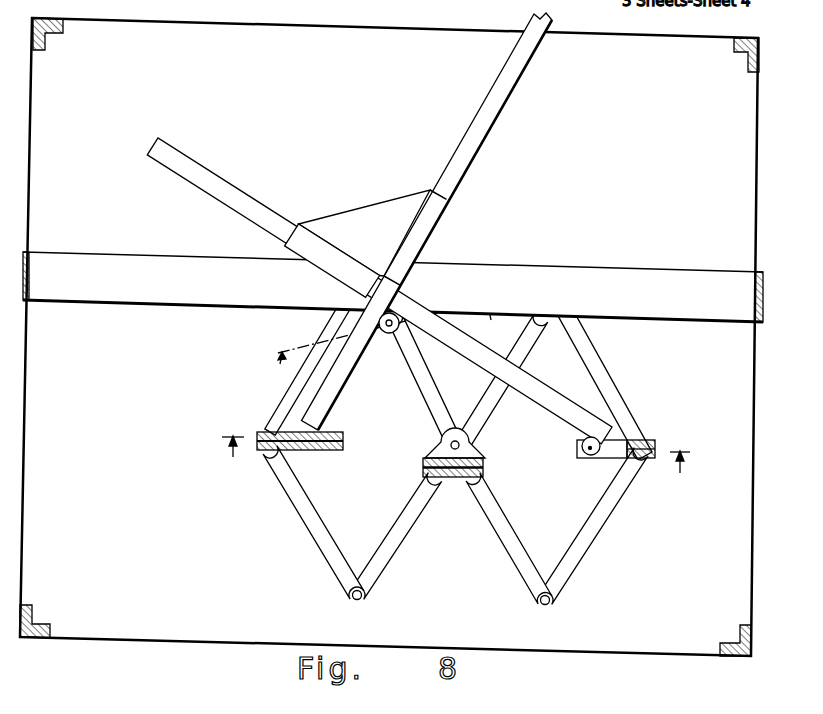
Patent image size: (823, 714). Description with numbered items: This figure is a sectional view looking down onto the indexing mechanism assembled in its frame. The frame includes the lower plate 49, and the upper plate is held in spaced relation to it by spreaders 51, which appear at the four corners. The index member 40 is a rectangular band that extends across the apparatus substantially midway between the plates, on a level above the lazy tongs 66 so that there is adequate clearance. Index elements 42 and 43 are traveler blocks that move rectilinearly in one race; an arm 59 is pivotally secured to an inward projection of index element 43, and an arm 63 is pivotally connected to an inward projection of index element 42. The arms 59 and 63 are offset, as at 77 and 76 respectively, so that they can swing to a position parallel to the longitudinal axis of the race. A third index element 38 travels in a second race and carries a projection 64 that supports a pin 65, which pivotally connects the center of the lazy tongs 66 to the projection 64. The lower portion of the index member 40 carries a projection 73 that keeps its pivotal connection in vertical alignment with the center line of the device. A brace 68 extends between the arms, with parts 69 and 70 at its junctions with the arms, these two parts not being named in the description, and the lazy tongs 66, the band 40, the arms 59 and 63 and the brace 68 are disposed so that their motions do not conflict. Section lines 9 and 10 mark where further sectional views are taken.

The section line 9- 9 is at (456, 463).
The section line 10- 10 is at (389, 340).
The index element 38 is at (463, 468).
The index member 40 is at (697, 278).
The index element 42 is at (323, 445).
The index element 43 is at (648, 446).
The lower plate 49 is at (748, 497).
The spreaders 51 is at (44, 42).
The arm 59 is at (545, 390).
The arm 63 is at (556, 22).
The projection 64 is at (470, 447).
The pin 65 is at (450, 442).
The lazy tongs 66 is at (418, 513).
The brace 68 is at (372, 212).
The sleeve on rod 63 69 is at (430, 217).
The sleeve on rod 59 70 is at (297, 237).
The projection 73 is at (403, 327).
The offset 76 is at (322, 408).
The offset 77 is at (575, 412).